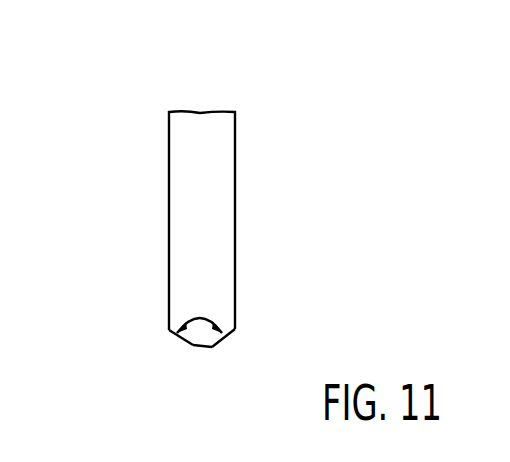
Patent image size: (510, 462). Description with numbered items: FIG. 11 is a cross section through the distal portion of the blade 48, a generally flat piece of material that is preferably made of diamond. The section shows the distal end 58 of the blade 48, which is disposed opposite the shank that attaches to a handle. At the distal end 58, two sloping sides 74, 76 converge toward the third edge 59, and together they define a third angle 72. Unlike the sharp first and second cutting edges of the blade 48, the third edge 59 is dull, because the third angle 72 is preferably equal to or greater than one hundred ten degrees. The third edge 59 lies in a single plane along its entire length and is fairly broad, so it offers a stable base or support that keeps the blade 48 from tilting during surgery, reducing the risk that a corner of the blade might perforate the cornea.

The blade 48 is at (202, 228).
The distal end 58 is at (186, 182).
The third angle 72 is at (200, 318).
The sloping side 74 is at (185, 338).
The third edge 59 is at (210, 348).
The sloping side 76 is at (225, 338).